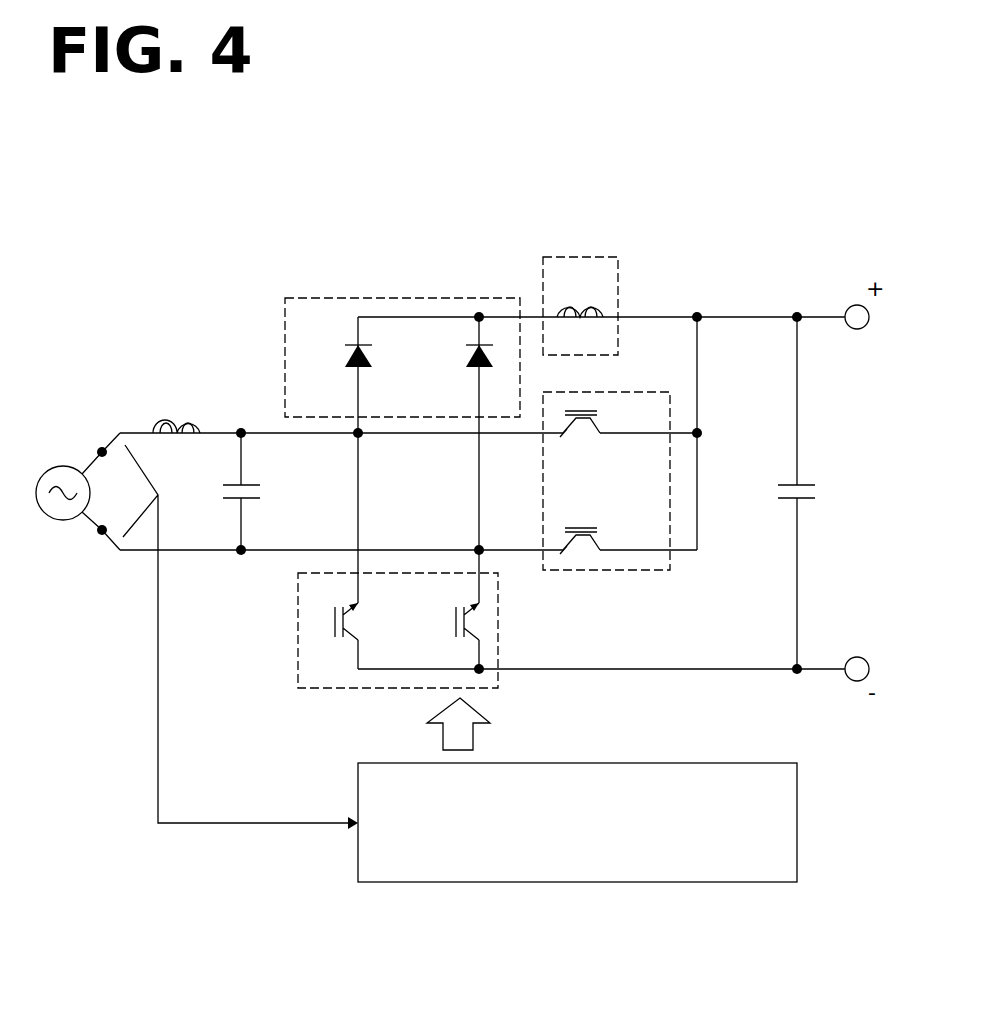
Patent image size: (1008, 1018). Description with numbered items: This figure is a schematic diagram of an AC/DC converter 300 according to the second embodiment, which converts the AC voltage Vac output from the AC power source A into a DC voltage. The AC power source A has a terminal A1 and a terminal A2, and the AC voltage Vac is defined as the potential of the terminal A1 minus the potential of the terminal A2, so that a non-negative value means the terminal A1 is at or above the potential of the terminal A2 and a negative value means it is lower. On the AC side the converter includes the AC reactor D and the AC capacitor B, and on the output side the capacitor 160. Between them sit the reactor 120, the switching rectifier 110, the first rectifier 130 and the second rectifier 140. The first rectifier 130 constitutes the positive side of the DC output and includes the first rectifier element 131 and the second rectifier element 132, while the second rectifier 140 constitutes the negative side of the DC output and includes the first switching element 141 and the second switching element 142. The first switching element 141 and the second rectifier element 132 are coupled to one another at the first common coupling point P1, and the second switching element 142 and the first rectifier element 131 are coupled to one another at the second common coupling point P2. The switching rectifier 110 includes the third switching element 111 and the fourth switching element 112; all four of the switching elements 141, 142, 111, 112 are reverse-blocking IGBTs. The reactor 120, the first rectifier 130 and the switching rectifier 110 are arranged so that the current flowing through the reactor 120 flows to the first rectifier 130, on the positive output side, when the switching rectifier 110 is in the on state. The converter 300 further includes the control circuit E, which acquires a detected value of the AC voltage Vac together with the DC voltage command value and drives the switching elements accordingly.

The AC power source A is at (78, 489).
The terminal A1 is at (101, 448).
The terminal A2 is at (101, 535).
The AC reactor D is at (176, 411).
The AC capacitor B is at (254, 491).
The first common coupling point P1 is at (362, 438).
The second common coupling point P2 is at (474, 544).
The switching rectifier 110 is at (606, 511).
The third switching element 111 is at (599, 417).
The fourth switching element 112 is at (599, 533).
The reactor 120 is at (622, 266).
The first rectifier 130 is at (402, 326).
The first rectifier element 131 is at (459, 347).
The second rectifier element 132 is at (339, 347).
The second rectifier 140 is at (363, 630).
The first switching element 141 is at (332, 610).
The second switching element 142 is at (450, 610).
The capacitor 160 is at (822, 496).
The AC/DC converter 300 is at (577, 856).
The AC voltage Vac is at (240, 660).
The control circuit E is at (824, 819).